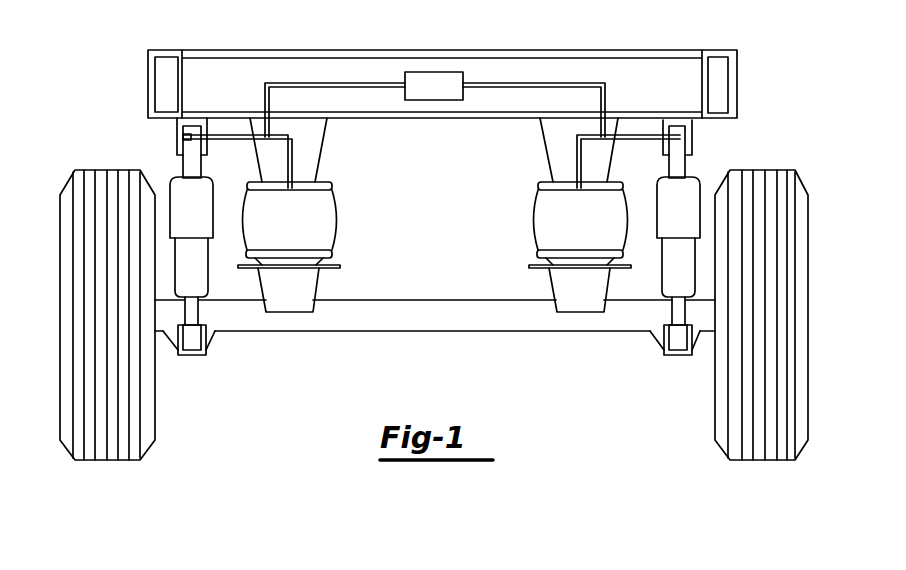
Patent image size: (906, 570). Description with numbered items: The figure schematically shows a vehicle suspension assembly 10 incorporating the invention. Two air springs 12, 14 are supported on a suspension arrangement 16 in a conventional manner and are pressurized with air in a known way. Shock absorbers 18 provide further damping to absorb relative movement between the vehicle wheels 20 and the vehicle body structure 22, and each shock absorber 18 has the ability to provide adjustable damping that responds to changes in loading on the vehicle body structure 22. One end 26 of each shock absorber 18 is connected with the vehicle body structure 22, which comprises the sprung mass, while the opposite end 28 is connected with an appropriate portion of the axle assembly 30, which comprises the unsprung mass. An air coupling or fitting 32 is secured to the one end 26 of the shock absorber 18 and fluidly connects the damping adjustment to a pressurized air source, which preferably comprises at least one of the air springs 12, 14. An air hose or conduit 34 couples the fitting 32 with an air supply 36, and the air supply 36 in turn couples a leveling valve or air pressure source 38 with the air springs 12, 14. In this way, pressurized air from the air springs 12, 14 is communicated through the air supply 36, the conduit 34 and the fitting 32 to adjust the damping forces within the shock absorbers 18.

The vehicle suspension assembly 10 is at (492, 70).
The air spring 12 is at (281, 231).
The air spring 14 is at (572, 231).
The suspension arrangement 16 is at (357, 237).
The shock absorber 18 is at (183, 227).
The vehicle wheel 20 is at (108, 462).
The vehicle body structure 22 is at (676, 52).
The one end of the shock absorber 26 is at (190, 167).
The opposite end of the shock absorber 28 is at (196, 311).
The axle assembly 30 is at (457, 300).
The air coupling or fitting 32 is at (184, 137).
The air hose or conduit 34 is at (229, 134).
The air supply 36 is at (345, 83).
The leveling valve or air pressure source 38 is at (426, 98).